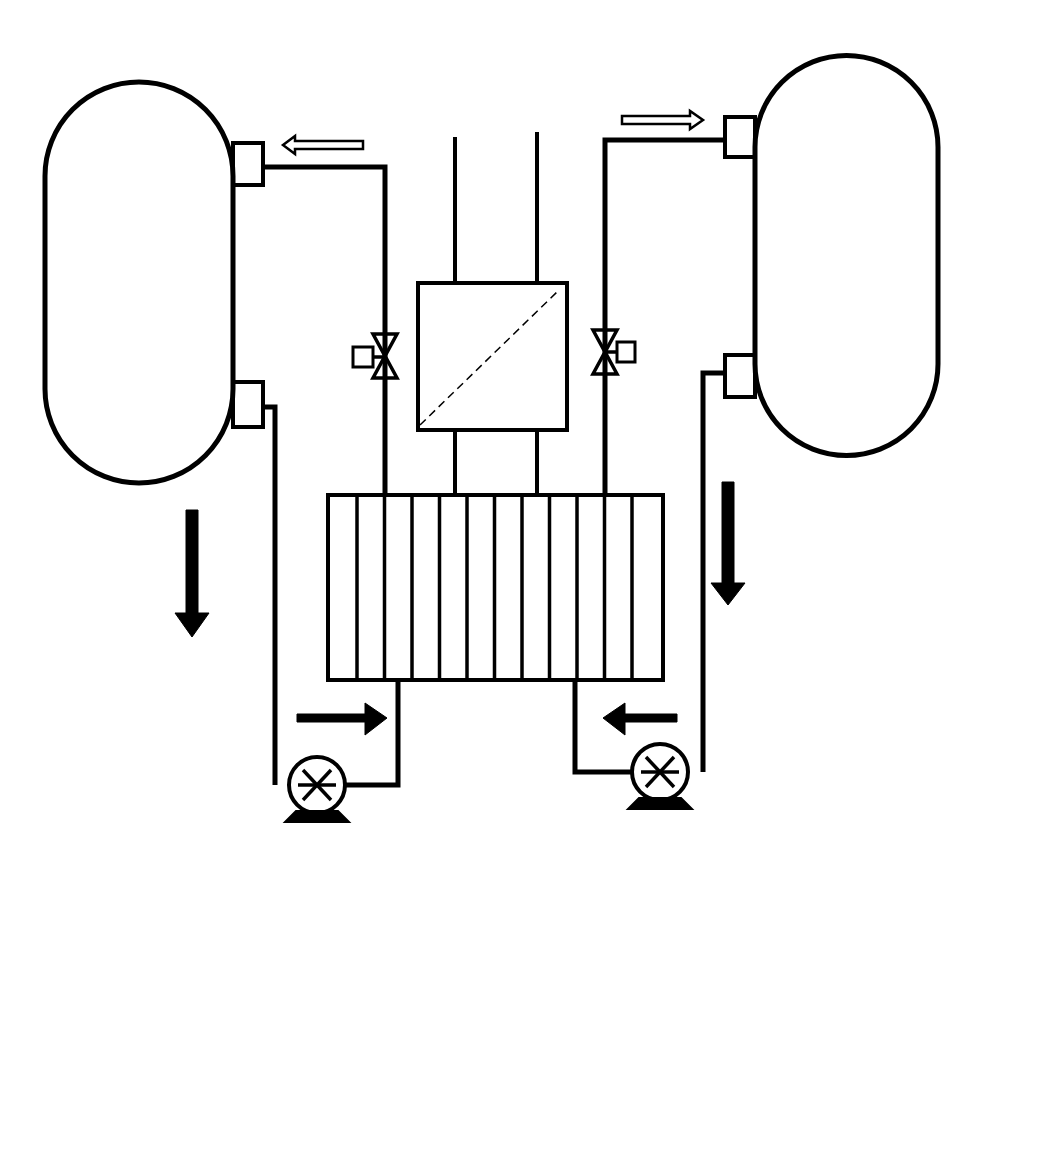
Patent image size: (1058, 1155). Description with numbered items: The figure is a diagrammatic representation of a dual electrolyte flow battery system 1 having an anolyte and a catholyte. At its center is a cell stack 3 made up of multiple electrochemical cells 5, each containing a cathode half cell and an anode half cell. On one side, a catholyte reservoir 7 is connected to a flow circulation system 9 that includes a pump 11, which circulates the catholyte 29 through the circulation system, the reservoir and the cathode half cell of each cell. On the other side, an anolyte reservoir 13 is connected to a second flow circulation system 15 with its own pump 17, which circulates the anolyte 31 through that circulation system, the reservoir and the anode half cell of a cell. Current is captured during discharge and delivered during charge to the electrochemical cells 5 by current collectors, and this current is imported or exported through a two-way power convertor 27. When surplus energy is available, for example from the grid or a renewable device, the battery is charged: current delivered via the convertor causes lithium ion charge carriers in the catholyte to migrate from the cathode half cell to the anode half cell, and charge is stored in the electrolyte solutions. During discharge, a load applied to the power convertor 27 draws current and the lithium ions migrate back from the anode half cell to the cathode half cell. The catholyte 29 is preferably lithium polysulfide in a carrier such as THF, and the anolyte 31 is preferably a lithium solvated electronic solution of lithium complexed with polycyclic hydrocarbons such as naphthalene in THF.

The dual electrolyte flow battery system 1 is at (152, 77).
The cell stack 3 is at (582, 638).
The electrochemical cells 5 is at (505, 674).
The catholyte reservoir 7 is at (98, 484).
The flow circulation system 9 is at (260, 661).
The pump 11 is at (278, 786).
The anolyte reservoir 13 is at (903, 449).
The flow circulation system 15 is at (708, 696).
The pump 17 is at (678, 776).
The two-way power convertor 27 is at (540, 312).
The catholyte 29 is at (149, 432).
The anolyte 31 is at (876, 400).